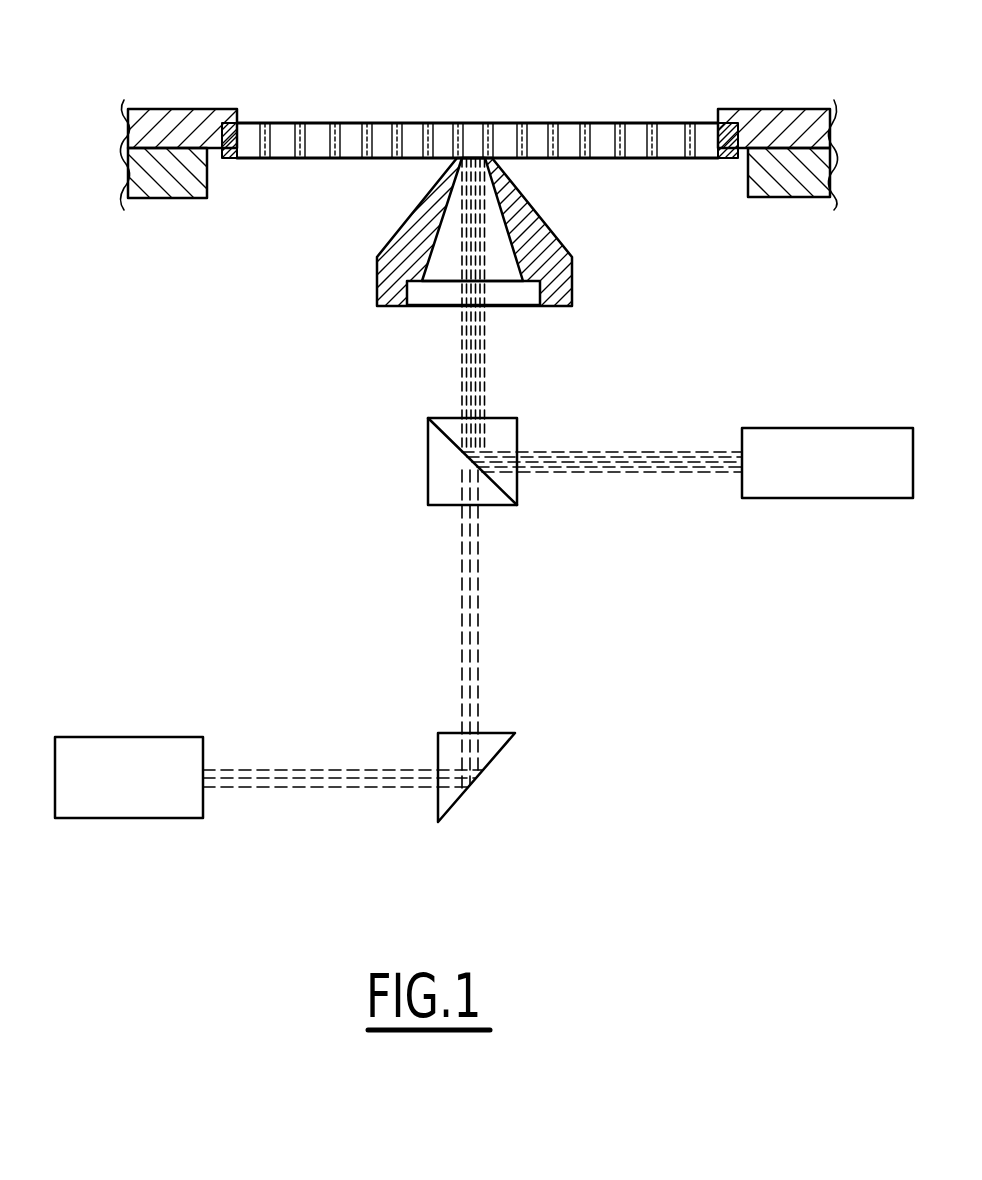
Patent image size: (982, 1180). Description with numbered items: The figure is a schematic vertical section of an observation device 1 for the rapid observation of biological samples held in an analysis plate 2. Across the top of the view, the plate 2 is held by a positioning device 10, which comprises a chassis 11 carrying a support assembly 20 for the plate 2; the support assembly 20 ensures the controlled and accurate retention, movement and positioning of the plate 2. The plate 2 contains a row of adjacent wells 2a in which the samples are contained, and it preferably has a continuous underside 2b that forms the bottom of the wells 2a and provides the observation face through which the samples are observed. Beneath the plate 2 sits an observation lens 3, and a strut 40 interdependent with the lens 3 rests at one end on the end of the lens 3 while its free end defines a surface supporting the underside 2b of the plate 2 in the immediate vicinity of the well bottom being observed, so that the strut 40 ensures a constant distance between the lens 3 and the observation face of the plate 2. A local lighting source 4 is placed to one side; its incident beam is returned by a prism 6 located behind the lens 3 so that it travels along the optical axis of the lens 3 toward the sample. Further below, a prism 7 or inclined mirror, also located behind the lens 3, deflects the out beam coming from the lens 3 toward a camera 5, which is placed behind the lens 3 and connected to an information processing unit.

The observation device 1 is at (312, 398).
The biological samples analysis plate 2 is at (569, 102).
The wells 2a is at (345, 122).
The continuous underside 2b is at (310, 160).
The observation lens 3 is at (496, 366).
The lighting source 4 is at (793, 465).
The camera 5 is at (148, 797).
The prism 6 is at (442, 465).
The prism or inclined mirror 7 is at (470, 782).
The positioning device 10 is at (138, 215).
The chassis 11 is at (777, 188).
The support assembly 20 is at (791, 96).
The strut 40 is at (562, 242).